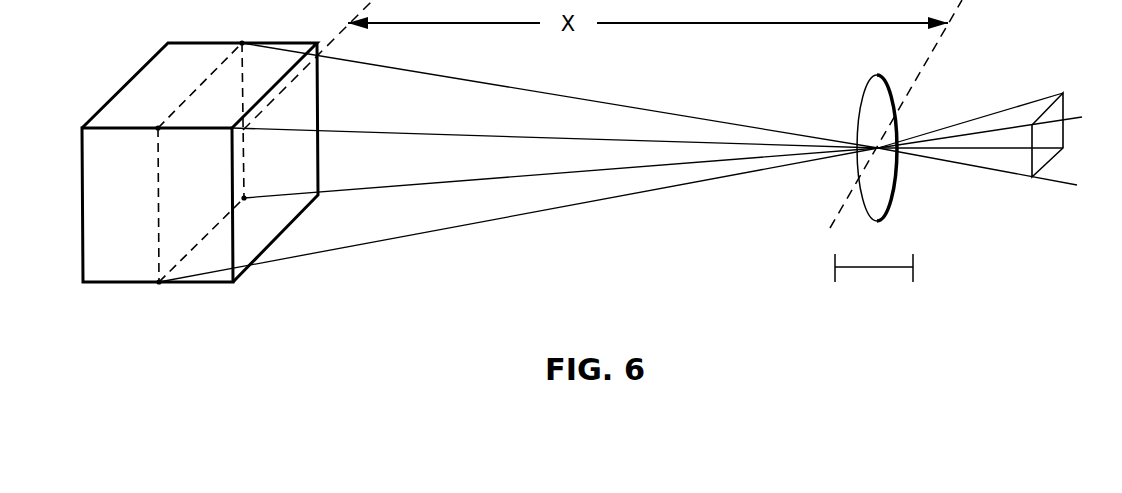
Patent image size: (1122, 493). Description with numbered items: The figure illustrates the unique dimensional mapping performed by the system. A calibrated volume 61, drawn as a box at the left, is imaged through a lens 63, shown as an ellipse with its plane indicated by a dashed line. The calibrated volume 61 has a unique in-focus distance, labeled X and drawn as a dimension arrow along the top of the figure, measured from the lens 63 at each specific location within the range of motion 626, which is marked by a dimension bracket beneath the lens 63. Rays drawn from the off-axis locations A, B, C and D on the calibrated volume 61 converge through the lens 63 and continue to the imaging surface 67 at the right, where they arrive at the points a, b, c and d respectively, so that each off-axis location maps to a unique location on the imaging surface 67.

The calibrated volume 61 is at (122, 283).
The lens 63 is at (857, 103).
The imaging surface 67 is at (1065, 104).
The range of motion 626 is at (861, 267).